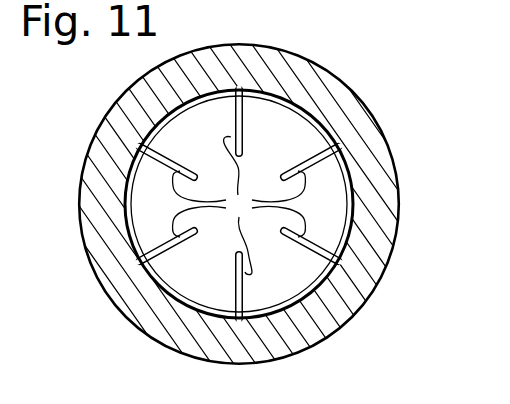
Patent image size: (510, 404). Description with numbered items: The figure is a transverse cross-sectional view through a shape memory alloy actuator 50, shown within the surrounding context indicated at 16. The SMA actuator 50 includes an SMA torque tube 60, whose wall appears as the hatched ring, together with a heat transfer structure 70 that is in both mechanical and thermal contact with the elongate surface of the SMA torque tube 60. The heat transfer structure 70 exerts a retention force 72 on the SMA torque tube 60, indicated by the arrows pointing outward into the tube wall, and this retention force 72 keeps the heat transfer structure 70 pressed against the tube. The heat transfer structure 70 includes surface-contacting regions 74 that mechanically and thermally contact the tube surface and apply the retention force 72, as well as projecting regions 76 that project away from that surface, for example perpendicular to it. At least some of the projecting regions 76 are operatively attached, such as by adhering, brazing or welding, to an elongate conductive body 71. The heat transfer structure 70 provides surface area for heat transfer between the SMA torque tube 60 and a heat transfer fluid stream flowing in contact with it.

The catheter 16 is at (429, 43).
The shape memory alloy actuator 50 is at (398, 84).
The SMA torque tube 60 is at (400, 198).
The heat transfer structure 70 is at (187, 104).
The elongate conductive body 71 is at (287, 116).
The retention force 72 is at (160, 116).
The surface-contacting regions 74 is at (132, 153).
The projecting regions 76 is at (239, 206).